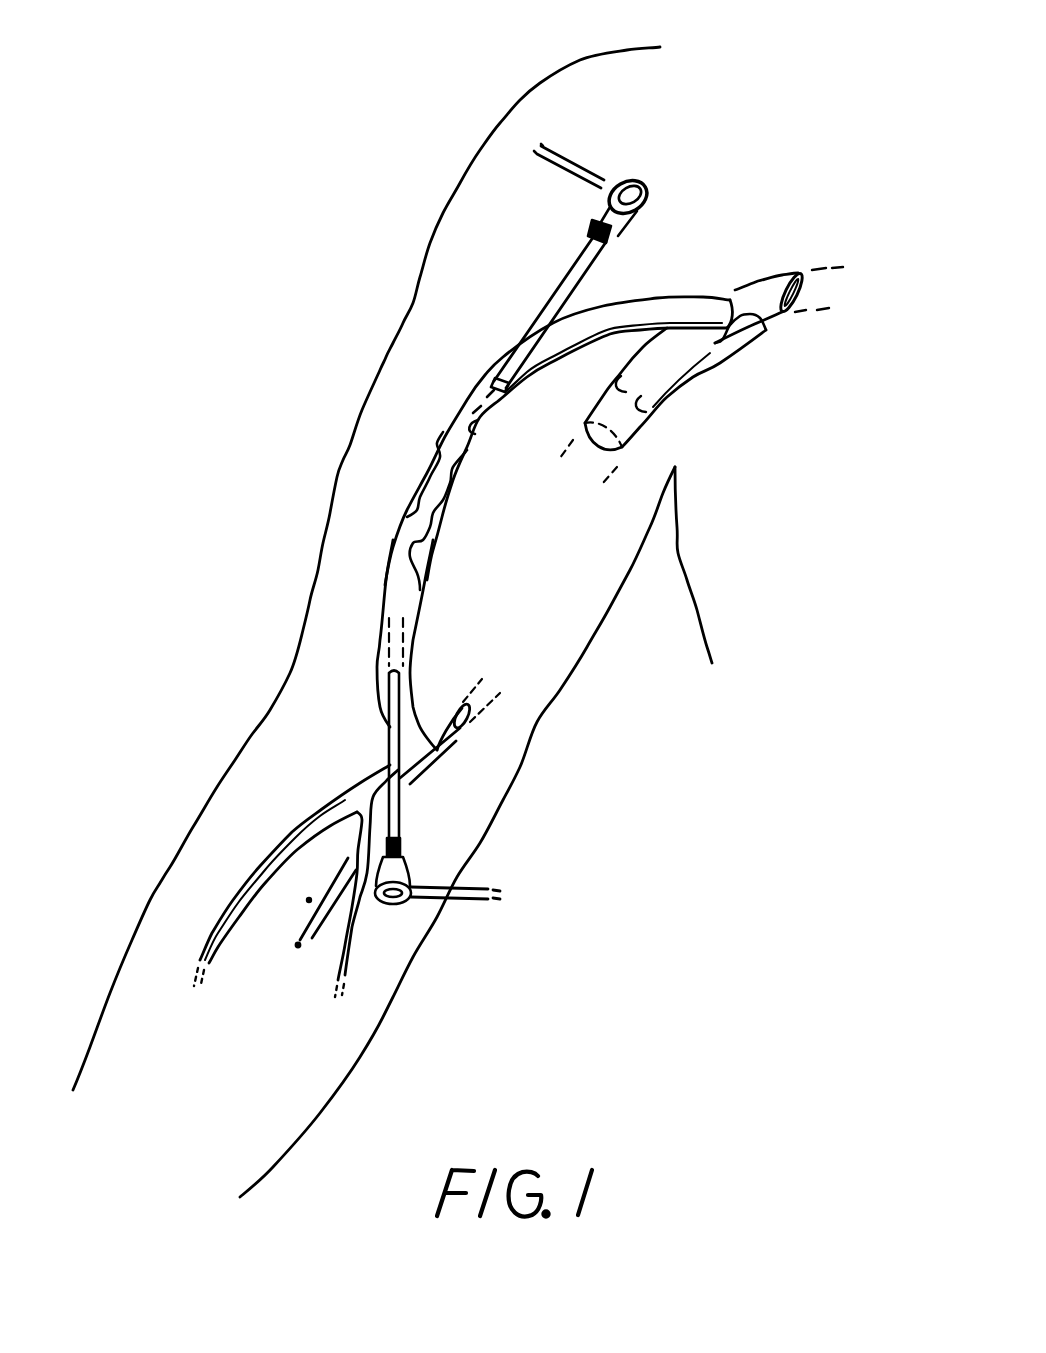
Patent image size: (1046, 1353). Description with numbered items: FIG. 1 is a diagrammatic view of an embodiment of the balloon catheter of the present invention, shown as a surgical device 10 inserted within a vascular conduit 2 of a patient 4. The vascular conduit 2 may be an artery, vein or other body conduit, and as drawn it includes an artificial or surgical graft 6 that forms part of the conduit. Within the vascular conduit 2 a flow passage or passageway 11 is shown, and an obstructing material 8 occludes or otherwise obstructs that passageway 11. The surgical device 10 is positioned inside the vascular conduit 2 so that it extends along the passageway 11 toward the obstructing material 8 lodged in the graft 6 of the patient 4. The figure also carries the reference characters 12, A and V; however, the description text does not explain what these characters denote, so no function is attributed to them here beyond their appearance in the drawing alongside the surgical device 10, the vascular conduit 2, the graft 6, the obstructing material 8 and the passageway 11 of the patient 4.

The vascular conduit 2 is at (684, 296).
The patient 4 is at (337, 477).
The artificial or surgical graft 6 is at (552, 358).
The obstructing material 8 is at (420, 467).
The surgical device 10 is at (618, 156).
The flow passage or passageway 11 is at (805, 283).
The catheter shaft 12 is at (587, 260).
The artery A is at (428, 748).
The vein V is at (697, 355).